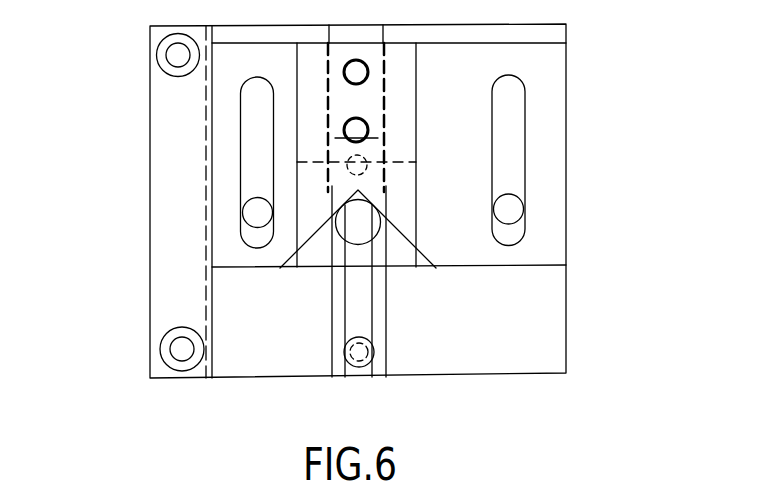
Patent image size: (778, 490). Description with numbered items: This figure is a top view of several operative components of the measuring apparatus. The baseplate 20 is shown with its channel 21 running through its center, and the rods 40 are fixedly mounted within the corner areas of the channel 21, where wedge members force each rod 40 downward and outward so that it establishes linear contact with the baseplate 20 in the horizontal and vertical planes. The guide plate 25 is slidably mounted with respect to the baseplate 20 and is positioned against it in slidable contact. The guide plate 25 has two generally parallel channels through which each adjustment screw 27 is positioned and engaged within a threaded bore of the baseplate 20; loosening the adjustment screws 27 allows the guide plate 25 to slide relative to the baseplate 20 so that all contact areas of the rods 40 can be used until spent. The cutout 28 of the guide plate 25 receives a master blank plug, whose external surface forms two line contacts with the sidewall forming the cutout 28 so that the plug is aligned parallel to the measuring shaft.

The baseplate 20 is at (543, 310).
The channel 21 is at (358, 292).
The guide plate 25 is at (548, 133).
The adjustment screw 27 is at (257, 213).
The cutout 28 is at (250, 118).
The rod 40 is at (332, 318).